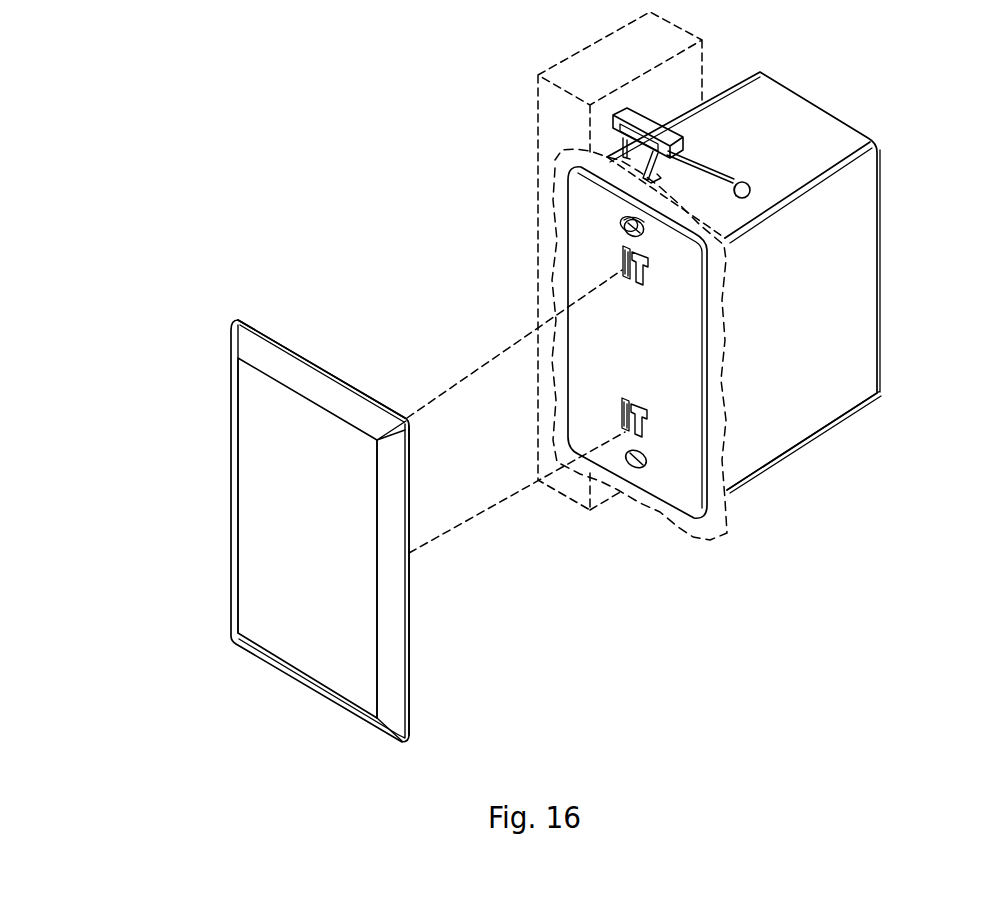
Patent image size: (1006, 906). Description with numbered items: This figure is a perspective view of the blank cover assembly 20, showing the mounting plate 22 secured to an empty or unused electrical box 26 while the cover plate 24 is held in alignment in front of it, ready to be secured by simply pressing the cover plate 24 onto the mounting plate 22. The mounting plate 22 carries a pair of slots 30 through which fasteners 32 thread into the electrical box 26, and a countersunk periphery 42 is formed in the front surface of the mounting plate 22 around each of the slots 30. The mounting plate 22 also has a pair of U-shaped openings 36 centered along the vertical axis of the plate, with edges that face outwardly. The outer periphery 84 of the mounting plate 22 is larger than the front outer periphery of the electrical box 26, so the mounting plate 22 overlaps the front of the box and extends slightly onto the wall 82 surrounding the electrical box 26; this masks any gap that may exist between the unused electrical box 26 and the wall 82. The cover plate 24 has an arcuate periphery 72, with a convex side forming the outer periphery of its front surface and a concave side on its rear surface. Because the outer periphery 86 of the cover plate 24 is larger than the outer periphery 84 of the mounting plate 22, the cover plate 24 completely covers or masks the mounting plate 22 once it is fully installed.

The blank cover assembly 20 is at (292, 193).
The mounting plate 22 is at (652, 353).
The cover plate 24 is at (190, 377).
The electrical box 26 is at (832, 462).
The slots 30 is at (630, 217).
The fasteners 32 is at (625, 232).
The U-shaped openings 36 is at (623, 264).
The countersunk periphery 42 is at (640, 229).
The arcuate periphery 72 is at (393, 612).
The wall 82 is at (562, 156).
The outer periphery of the mounting plate 84 is at (673, 213).
The outer periphery of the cover plate 86 is at (322, 360).